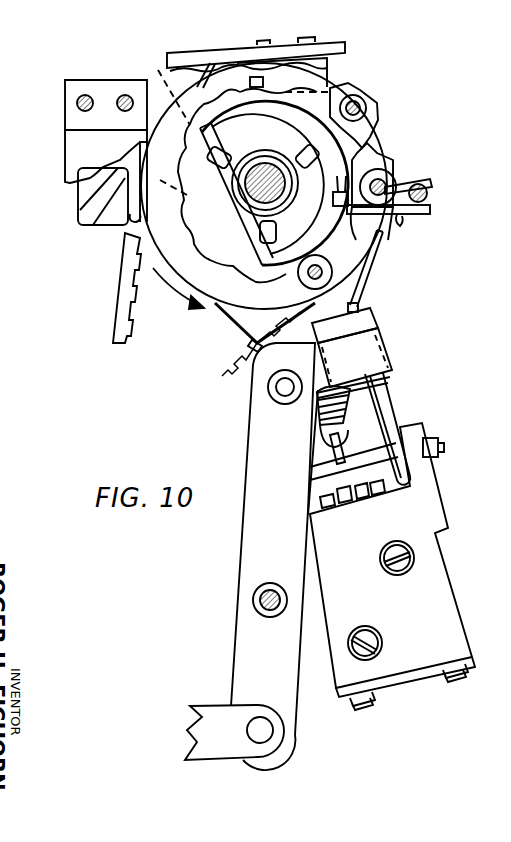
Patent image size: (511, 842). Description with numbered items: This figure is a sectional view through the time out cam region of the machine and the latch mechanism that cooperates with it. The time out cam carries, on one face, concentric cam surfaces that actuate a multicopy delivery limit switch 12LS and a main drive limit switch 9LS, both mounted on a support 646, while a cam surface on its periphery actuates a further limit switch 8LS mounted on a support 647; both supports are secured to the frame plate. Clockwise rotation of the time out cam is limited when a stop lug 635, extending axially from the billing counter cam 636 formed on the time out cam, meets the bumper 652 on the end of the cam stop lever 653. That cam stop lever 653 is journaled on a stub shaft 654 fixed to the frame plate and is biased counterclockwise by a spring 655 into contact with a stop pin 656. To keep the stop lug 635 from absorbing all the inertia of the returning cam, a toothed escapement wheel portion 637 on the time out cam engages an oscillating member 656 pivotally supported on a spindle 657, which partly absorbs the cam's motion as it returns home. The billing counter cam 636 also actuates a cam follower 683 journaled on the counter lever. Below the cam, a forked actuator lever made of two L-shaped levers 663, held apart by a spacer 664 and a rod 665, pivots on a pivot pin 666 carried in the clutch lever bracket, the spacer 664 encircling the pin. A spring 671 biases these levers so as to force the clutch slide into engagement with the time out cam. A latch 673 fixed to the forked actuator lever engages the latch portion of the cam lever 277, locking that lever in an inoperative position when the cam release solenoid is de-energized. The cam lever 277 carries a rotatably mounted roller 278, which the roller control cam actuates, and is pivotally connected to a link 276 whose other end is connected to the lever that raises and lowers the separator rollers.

The support 646 is at (347, 47).
The main drive limit switch 9LS is at (329, 68).
The multicopy delivery limit switch 12LS is at (157, 68).
The support 647 is at (66, 152).
The limit switch 8LS is at (78, 206).
The spindle 657 is at (366, 102).
The stop pin 656 is at (376, 115).
The billing counter cam 636 is at (386, 163).
The stub shaft 654 is at (395, 180).
The spring 655 is at (428, 188).
The cam stop lever 653 is at (412, 224).
The bumper 652 is at (336, 190).
The stop lug 635 is at (277, 234).
The toothed escapement wheel portion 637 is at (218, 252).
The cam follower 683 is at (304, 284).
The L-shaped levers 663 is at (365, 285).
The latch 673 is at (380, 318).
The rod 665 is at (250, 344).
The spring 671 is at (342, 392).
The roller 278 is at (306, 411).
The spacer 664 is at (383, 457).
The pivot pin 666 is at (444, 447).
The cam lever 277 is at (242, 548).
The link 276 is at (221, 705).